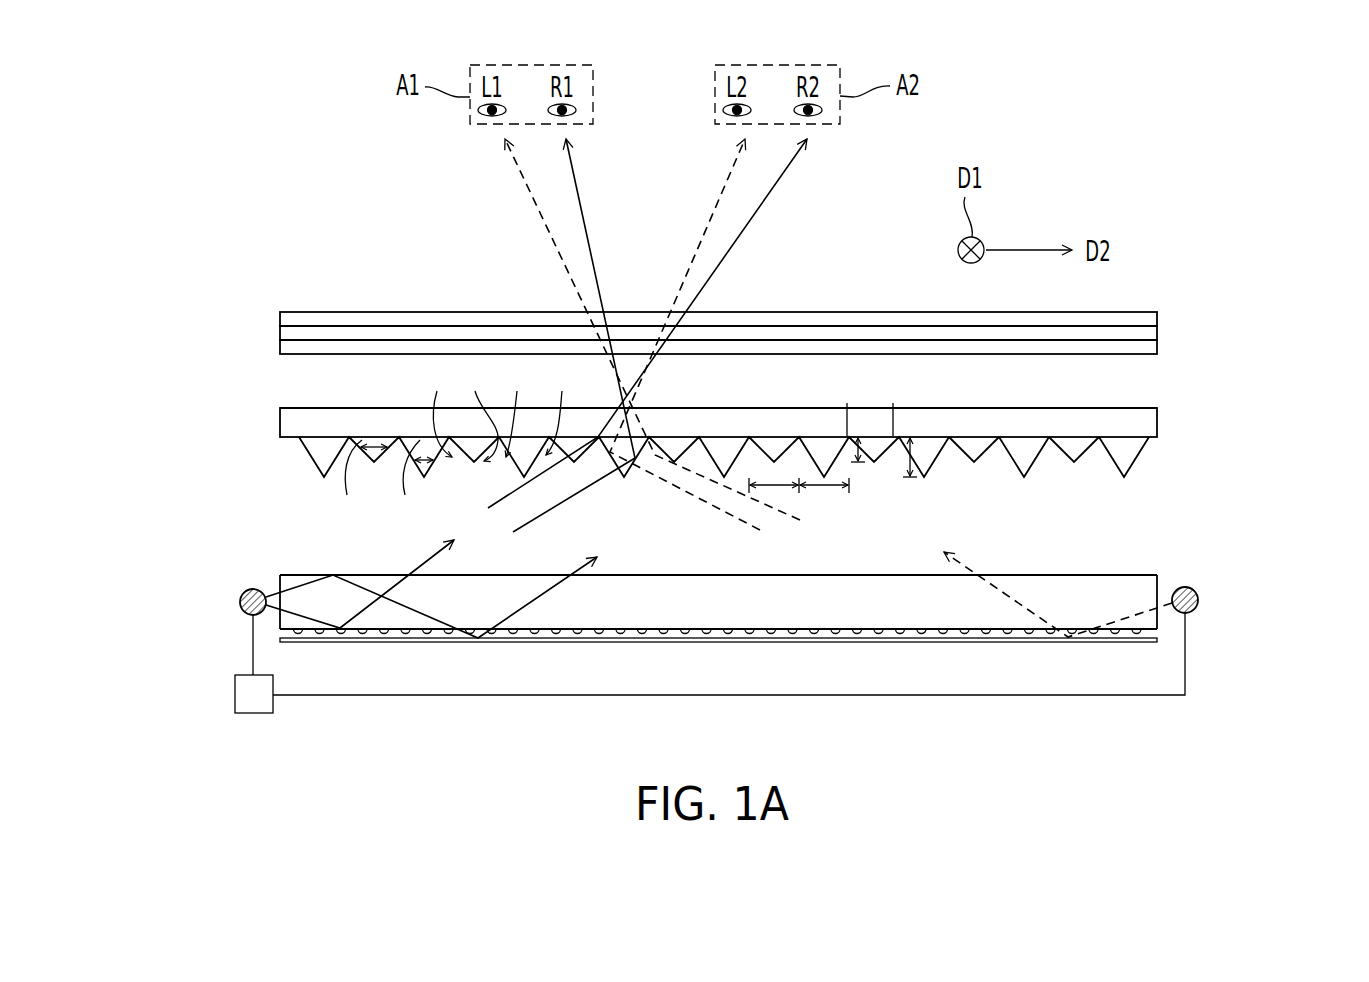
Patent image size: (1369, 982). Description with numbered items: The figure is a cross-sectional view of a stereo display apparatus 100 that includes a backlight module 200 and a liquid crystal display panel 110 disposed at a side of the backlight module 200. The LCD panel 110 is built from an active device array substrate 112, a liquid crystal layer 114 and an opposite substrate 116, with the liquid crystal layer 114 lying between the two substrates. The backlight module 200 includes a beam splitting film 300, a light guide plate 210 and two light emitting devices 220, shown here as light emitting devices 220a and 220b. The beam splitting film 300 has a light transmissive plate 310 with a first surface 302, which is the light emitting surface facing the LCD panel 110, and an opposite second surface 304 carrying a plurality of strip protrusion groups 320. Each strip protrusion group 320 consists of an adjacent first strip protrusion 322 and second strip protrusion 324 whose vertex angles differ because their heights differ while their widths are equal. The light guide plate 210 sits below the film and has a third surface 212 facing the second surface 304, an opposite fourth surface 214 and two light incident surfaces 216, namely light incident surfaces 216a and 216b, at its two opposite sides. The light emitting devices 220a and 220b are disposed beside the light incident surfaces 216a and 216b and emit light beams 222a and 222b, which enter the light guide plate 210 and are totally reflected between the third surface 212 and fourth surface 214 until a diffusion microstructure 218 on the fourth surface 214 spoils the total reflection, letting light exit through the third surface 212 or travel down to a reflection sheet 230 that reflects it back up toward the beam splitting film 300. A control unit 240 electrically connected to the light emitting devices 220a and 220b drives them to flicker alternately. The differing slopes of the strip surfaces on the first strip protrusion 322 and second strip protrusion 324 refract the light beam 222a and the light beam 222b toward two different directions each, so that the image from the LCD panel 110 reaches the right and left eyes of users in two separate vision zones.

The stereo display apparatus 100 is at (1242, 778).
The liquid crystal display panel 110 is at (783, 326).
The active device array substrate 112 is at (754, 358).
The liquid crystal layer 114 is at (1157, 333).
The opposite substrate 116 is at (1157, 317).
The backlight module 200 is at (1180, 495).
The light guide plate 210 is at (1147, 587).
The third surface 212 is at (851, 573).
The fourth surface 214 is at (976, 634).
The light incident surfaces 216 is at (721, 589).
The light incident surface 216a is at (276, 584).
The light incident surface 216b is at (1162, 618).
The diffusion microstructure 218 is at (900, 633).
The light emitting devices 220 is at (707, 612).
The light emitting device 220a is at (239, 601).
The light emitting device 220b is at (1199, 598).
The light beam 222a is at (510, 498).
The light beam 222b is at (697, 498).
The reflection sheet 230 is at (1032, 643).
The control unit 240 is at (247, 693).
The beam splitting film 300 is at (1157, 418).
The first surface 302 is at (966, 404).
The second surface 304 is at (1137, 441).
The light transmissive plate 310 is at (1123, 415).
The strip protrusion groups 320 is at (1038, 498).
The first strip protrusion 322 is at (962, 448).
The second strip protrusion 324 is at (1071, 477).